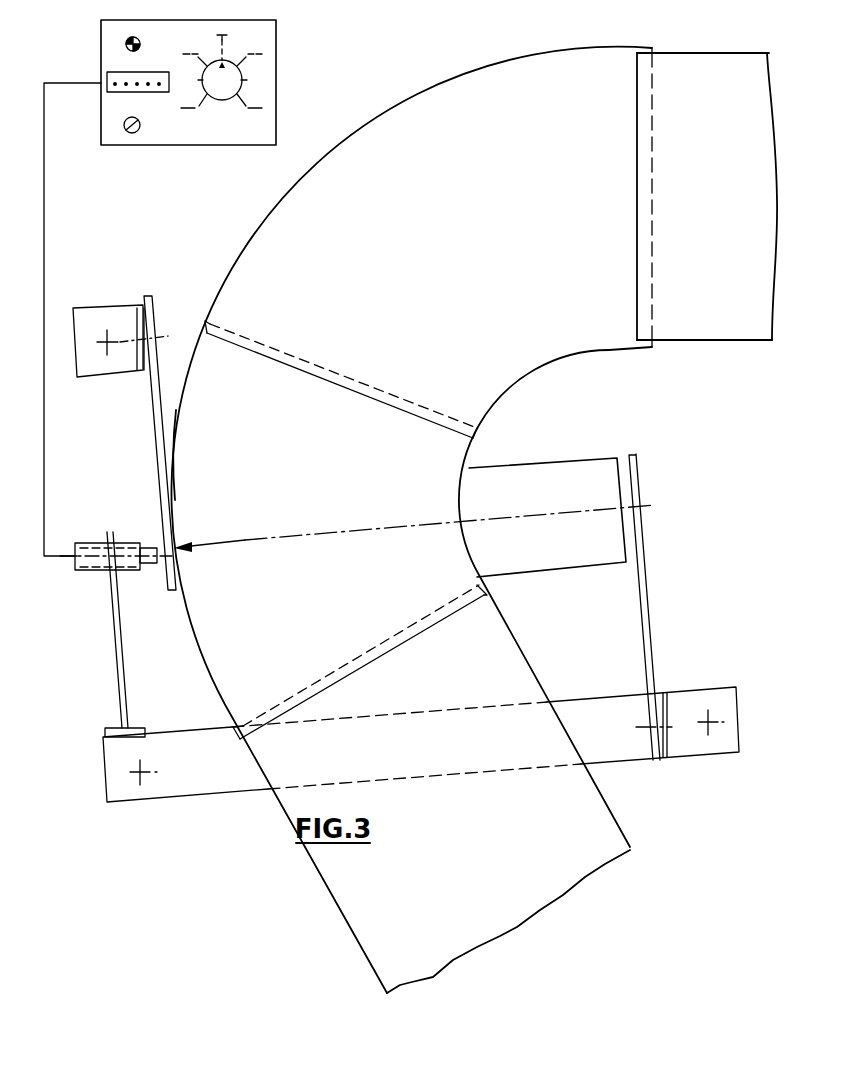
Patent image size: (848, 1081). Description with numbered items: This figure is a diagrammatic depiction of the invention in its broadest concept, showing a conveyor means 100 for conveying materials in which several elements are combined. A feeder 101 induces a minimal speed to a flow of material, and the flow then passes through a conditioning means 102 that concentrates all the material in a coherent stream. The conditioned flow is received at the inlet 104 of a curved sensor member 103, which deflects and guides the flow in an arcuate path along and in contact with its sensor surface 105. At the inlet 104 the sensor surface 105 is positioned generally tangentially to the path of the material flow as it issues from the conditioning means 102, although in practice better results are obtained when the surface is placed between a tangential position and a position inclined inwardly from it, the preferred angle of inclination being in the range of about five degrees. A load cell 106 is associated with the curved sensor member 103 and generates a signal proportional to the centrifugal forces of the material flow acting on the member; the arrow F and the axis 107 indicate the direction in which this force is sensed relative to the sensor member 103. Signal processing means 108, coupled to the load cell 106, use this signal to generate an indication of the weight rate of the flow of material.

The conveyor means 100 is at (598, 368).
The feeder 101 is at (694, 53).
The conditioning means 102 is at (426, 82).
The curved sensor member 103 is at (172, 414).
The inlet 104 is at (198, 340).
The sensor surface 105 is at (173, 453).
The load cell 106 is at (97, 571).
The pipe axis 107 is at (365, 530).
The signal processing means 108 is at (278, 118).
The flow direction arrow F is at (215, 538).